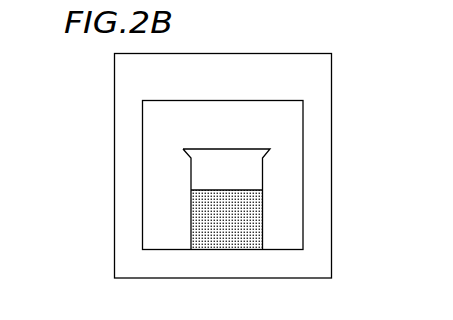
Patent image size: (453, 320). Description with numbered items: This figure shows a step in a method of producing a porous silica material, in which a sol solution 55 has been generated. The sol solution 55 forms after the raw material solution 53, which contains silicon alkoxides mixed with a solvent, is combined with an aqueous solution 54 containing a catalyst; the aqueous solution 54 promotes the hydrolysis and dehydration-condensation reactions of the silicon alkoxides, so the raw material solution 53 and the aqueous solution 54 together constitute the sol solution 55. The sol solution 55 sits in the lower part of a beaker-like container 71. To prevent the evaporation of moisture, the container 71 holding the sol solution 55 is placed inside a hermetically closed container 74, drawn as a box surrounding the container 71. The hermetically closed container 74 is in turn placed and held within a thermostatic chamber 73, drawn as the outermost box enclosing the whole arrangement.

The container 71 is at (262, 172).
The thermostatic chamber 73 is at (115, 252).
The hermetically closed container 74 is at (143, 201).
The raw material solution 53 is at (240, 231).
The aqueous solution 54 is at (238, 207).
The sol solution 55 is at (304, 216).